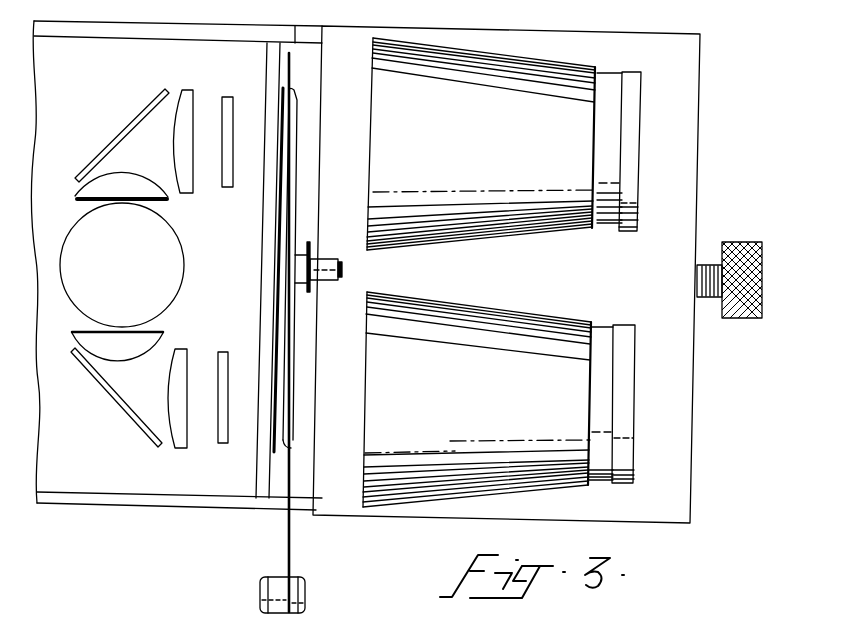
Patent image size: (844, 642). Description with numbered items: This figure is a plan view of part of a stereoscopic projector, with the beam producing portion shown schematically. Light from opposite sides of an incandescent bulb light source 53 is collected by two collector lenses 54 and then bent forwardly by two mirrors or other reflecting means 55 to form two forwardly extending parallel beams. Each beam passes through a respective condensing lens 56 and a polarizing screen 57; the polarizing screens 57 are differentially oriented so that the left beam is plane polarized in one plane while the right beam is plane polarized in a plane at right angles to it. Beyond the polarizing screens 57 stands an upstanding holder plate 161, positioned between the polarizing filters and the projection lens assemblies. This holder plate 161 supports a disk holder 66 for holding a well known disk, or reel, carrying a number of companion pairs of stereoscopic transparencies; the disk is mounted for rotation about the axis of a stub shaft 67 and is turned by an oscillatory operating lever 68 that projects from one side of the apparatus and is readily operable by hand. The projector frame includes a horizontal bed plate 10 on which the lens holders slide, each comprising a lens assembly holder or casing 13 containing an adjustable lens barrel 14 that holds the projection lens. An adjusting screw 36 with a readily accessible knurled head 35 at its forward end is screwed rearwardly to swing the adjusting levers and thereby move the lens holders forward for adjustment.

The bed plate 10 is at (686, 442).
The lens assembly holder or casing 13 is at (420, 245).
The adjustable lens barrel 14 is at (630, 231).
The knurled head 35 is at (742, 242).
The adjusting screw 36 is at (704, 264).
The incandescent bulb light source 53 is at (173, 257).
The collector lens 54 is at (167, 198).
The mirror or reflecting means 55 is at (113, 133).
The condensing lens 56 is at (173, 127).
The polarizing screen 57 is at (230, 100).
The disk holder 66 is at (297, 186).
The stub shaft 67 is at (327, 258).
The oscillatory operating lever 68 is at (270, 580).
The upstanding holder plate 161 is at (266, 213).